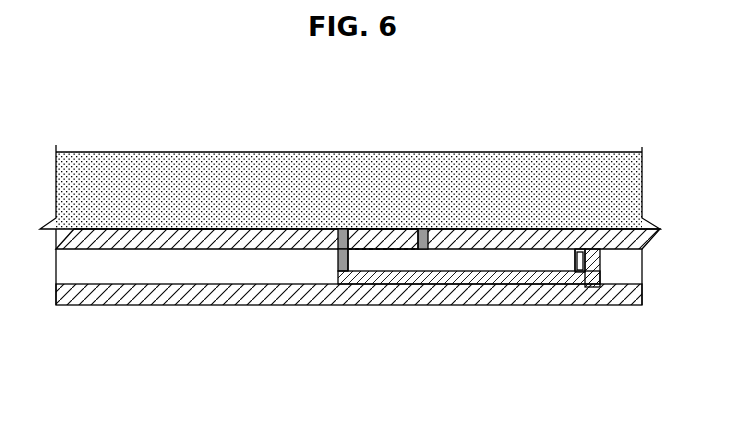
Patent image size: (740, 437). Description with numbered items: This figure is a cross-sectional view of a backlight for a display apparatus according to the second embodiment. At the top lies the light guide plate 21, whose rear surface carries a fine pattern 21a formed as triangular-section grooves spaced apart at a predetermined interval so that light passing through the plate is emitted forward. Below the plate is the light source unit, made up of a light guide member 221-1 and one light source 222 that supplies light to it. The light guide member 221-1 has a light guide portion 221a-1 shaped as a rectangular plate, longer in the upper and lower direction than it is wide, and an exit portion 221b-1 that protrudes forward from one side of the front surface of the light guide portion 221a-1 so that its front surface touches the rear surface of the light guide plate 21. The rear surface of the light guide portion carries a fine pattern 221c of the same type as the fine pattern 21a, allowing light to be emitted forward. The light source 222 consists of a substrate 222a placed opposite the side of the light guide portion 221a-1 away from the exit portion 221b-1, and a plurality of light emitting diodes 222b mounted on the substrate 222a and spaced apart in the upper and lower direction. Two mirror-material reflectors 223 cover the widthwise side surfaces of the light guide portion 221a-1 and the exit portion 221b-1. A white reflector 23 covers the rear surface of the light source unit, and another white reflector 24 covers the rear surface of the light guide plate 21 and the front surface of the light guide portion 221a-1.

The light guide plate 21 is at (521, 146).
The fine pattern 21a is at (208, 229).
The reflector 23 is at (228, 298).
The reflector 24 is at (147, 246).
The reflector 223 is at (343, 229).
The light guide member 221-1 is at (455, 312).
The light guide portion 221a-1 is at (463, 264).
The exit portion 221b-1 is at (388, 240).
The fine pattern 221c is at (353, 271).
The light source 222 is at (605, 322).
The substrate 222a is at (592, 263).
The light emitting diodes 222b is at (578, 264).